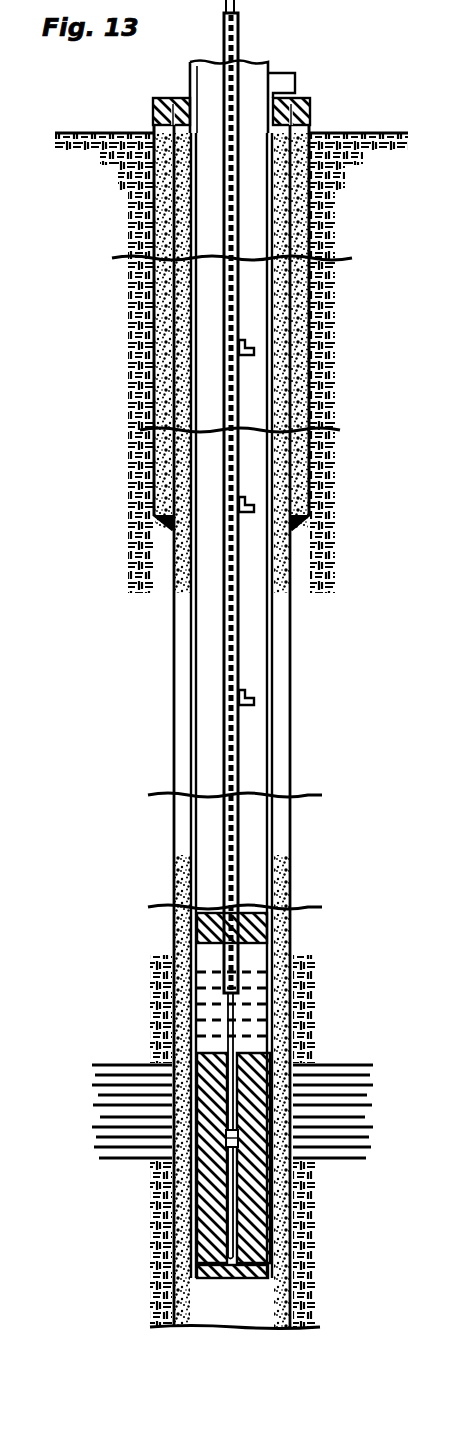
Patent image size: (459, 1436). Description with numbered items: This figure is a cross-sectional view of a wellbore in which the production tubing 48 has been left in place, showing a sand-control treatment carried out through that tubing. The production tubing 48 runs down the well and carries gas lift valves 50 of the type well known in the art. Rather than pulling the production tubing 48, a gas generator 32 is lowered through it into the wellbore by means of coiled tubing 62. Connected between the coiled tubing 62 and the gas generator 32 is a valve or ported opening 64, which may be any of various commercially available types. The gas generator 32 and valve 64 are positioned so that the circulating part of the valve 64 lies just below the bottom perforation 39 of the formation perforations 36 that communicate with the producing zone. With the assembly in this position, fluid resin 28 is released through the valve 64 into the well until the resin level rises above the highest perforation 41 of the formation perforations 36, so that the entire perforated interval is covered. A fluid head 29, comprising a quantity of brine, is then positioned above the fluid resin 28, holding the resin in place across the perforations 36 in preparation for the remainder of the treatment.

The fluid resin 28 is at (272, 1230).
The fluid head 29 is at (155, 991).
The gas generator 32 is at (227, 1233).
The formation perforations 36 is at (93, 1062).
The bottom perforation 39 is at (312, 1175).
The highest perforation 41 is at (300, 1033).
The production tubing 48 is at (237, 767).
The gas lift valves 50 is at (254, 352).
The coiled tubing 62 is at (235, 1032).
The valve or ported opening 64 is at (230, 1148).